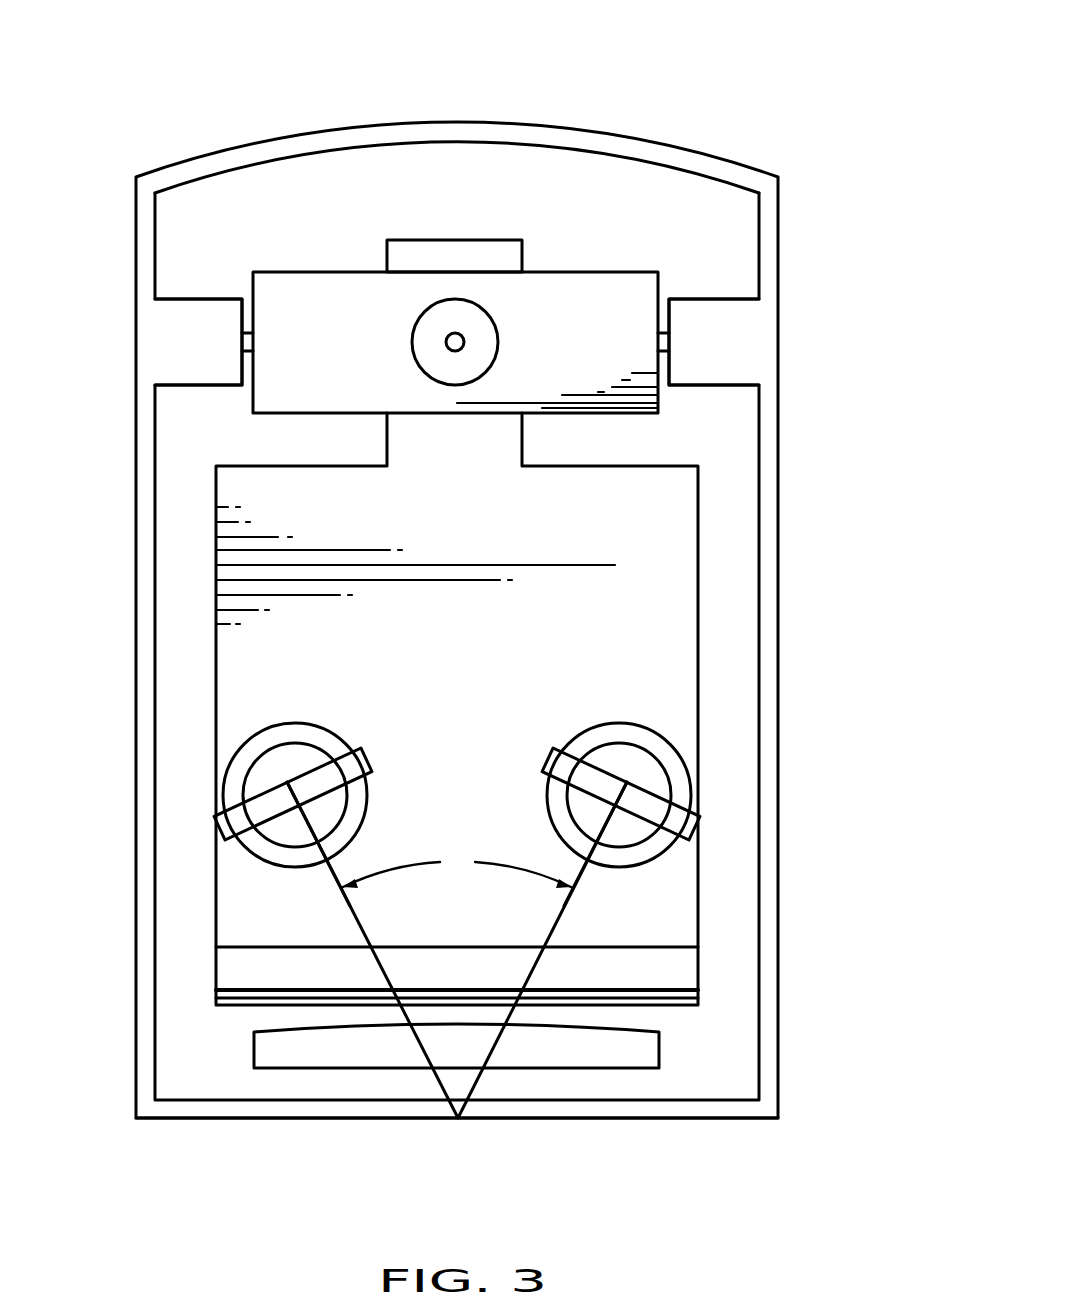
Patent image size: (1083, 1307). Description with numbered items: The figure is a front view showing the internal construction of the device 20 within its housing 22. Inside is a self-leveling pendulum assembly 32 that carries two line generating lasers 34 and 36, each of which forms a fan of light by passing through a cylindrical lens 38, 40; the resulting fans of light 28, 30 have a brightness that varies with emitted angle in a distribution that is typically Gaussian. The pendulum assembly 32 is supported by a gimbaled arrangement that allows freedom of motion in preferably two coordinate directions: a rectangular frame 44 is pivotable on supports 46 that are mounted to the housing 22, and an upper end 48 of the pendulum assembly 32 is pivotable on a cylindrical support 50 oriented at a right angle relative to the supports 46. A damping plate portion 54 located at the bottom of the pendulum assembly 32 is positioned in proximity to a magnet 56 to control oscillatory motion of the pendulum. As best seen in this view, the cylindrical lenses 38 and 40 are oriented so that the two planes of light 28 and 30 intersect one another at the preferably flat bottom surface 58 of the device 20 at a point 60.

The device 20 is at (722, 58).
The housing 22 is at (780, 443).
The fan of light 28 is at (564, 908).
The fan of light 30 is at (350, 908).
The self-leveling pendulum assembly 32 is at (714, 543).
The line generating laser 34 is at (277, 718).
The line generating laser 36 is at (632, 718).
The cylindrical lens 38 is at (265, 805).
The cylindrical lens 40 is at (647, 803).
The rectangular frame 44 is at (600, 313).
The supports 46 is at (188, 343).
The upper end 48 is at (458, 253).
The cylindrical support 50 is at (427, 353).
The damping plate portion 54 is at (238, 970).
The magnet 56 is at (273, 1047).
The bottom flat surface 58 is at (305, 1120).
The point 60 is at (458, 1118).